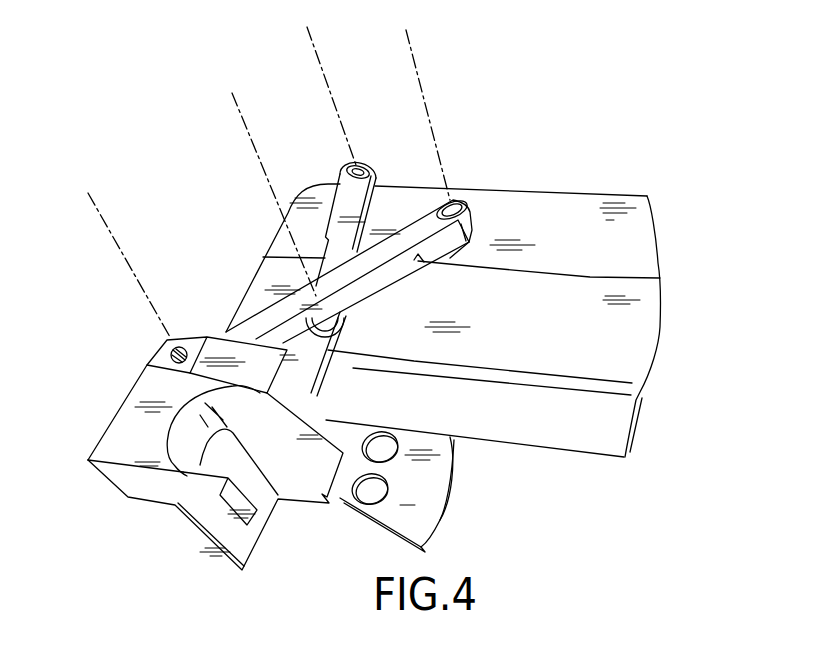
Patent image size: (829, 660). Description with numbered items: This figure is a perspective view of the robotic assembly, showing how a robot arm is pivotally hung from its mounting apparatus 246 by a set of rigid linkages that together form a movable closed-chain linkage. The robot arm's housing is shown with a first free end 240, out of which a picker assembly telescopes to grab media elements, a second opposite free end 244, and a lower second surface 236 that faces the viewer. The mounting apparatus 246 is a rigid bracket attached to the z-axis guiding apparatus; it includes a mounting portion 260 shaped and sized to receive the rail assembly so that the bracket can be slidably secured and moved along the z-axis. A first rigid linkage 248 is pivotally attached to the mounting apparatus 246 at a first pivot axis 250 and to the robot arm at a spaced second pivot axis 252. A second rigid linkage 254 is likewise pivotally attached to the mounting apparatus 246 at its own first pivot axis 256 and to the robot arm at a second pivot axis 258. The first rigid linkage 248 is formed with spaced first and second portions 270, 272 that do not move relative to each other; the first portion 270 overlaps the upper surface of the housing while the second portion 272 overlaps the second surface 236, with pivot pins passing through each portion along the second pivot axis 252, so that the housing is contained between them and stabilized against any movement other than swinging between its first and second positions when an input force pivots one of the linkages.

The second surface 236 is at (590, 313).
The first free end 240 is at (638, 414).
The second free end 244 is at (272, 241).
The mounting apparatus 246 is at (124, 397).
The first rigid linkage 248 is at (450, 258).
The first pivot axis 250 is at (144, 287).
The second pivot axis 252 is at (423, 97).
The second rigid linkage 254 is at (372, 204).
The first pivot axis 256 is at (249, 133).
The second pivot axis 258 is at (313, 52).
The mounting portion 260 is at (183, 427).
The first portion 270 is at (444, 497).
The second portion 272 is at (381, 270).